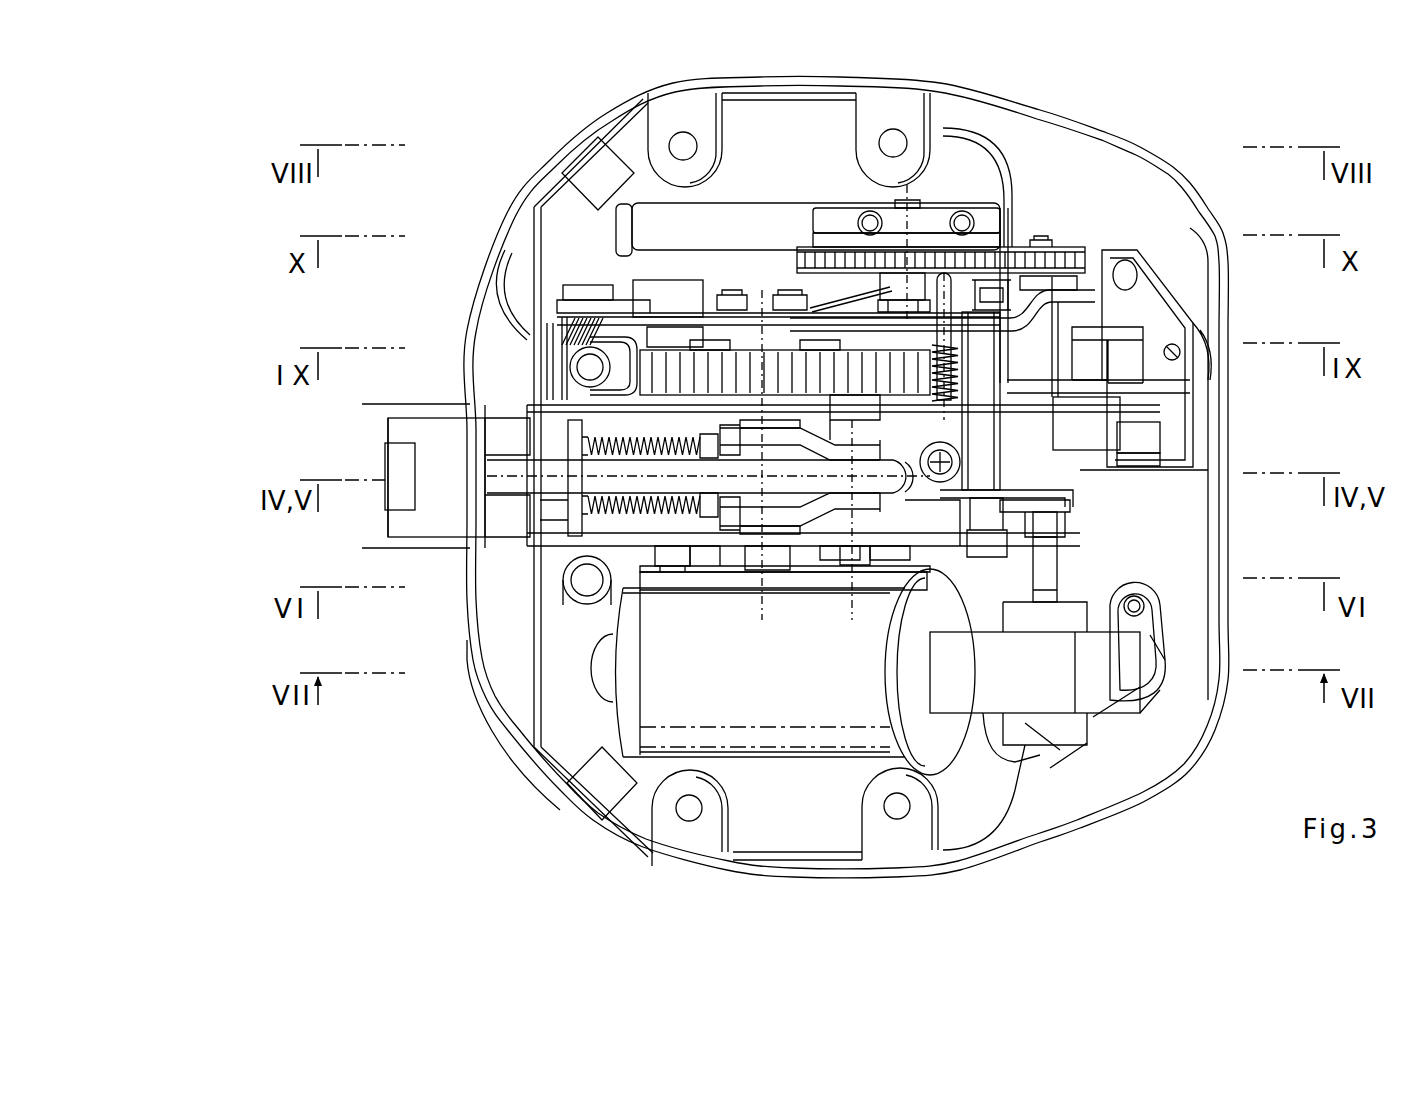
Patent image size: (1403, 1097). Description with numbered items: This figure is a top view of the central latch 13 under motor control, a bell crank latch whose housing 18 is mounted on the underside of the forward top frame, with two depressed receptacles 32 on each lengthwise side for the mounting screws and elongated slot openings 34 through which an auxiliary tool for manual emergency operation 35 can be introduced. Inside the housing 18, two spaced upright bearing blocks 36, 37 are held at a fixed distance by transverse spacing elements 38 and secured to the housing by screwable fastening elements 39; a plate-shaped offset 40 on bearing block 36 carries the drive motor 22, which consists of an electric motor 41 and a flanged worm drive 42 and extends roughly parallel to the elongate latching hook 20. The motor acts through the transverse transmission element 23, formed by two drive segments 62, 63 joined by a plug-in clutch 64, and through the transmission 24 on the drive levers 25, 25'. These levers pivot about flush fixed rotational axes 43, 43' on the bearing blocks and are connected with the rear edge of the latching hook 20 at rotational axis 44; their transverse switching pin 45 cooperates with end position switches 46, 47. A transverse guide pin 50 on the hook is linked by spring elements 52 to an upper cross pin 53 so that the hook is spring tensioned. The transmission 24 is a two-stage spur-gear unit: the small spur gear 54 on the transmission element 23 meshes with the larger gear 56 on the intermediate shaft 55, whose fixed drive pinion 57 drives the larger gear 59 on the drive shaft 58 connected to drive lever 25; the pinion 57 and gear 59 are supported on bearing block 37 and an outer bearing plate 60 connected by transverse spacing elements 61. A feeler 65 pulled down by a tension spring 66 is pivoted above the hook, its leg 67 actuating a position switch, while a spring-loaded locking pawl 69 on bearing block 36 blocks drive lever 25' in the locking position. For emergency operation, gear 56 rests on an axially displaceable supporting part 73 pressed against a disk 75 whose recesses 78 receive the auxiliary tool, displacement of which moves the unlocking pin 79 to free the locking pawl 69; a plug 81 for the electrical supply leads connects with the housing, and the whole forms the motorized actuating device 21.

The latch 13 is at (568, 825).
The housing 18 is at (1130, 780).
The latching hook 20 is at (492, 488).
The motorized actuating device 21 is at (1152, 690).
The drive motor 22 is at (832, 770).
The transverse transmission element 23 is at (1065, 512).
The transmission 24 is at (1020, 238).
The drive lever 25 is at (800, 447).
The drive lever 25' is at (838, 538).
The depressed receptacles 32 is at (703, 108).
The elongated slot openings 34 is at (750, 207).
The manual emergency operation 35 is at (1012, 218).
The bearing block 36 is at (780, 548).
The bearing block 37 is at (840, 420).
The transverse spacing elements 38 is at (672, 398).
The screwable fastening elements 39 is at (578, 368).
The plate-shaped offset 40 is at (1152, 630).
The electric motor 41 is at (772, 738).
The flanged worm drive 42 is at (1055, 700).
The rotational axis 43 is at (800, 437).
The rotational axis 43' is at (767, 592).
The rotational axis 44 is at (852, 480).
The transverse switching pin 45 is at (850, 550).
The end position switch 46 is at (676, 576).
The end position switch 47 is at (866, 558).
The transverse guide pin 50 is at (720, 467).
The spring elements 52 is at (650, 450).
The upper cross pin 53 is at (560, 518).
The spur gear 54 is at (1045, 252).
The intermediate shaft 55 is at (895, 280).
The gear 56 is at (810, 258).
The drive pinion 57 is at (895, 368).
The drive shaft 58 is at (745, 396).
The gear 59 is at (650, 340).
The outer bearing plate 60 is at (825, 395).
The transverse spacing elements 61 is at (690, 325).
The drive segment 62 is at (1057, 565).
The drive segment 63 is at (1043, 330).
The plug-in clutch 64 is at (1060, 456).
The feeler 65 is at (383, 428).
The tension spring 66 is at (552, 313).
The leg 67 is at (553, 340).
The locking pawl 69 is at (1042, 537).
The supporting part 73 is at (860, 230).
The disk 75 is at (985, 205).
The recesses 78 is at (960, 212).
The unlocking pin 79 is at (960, 430).
The plug 81 is at (1152, 330).